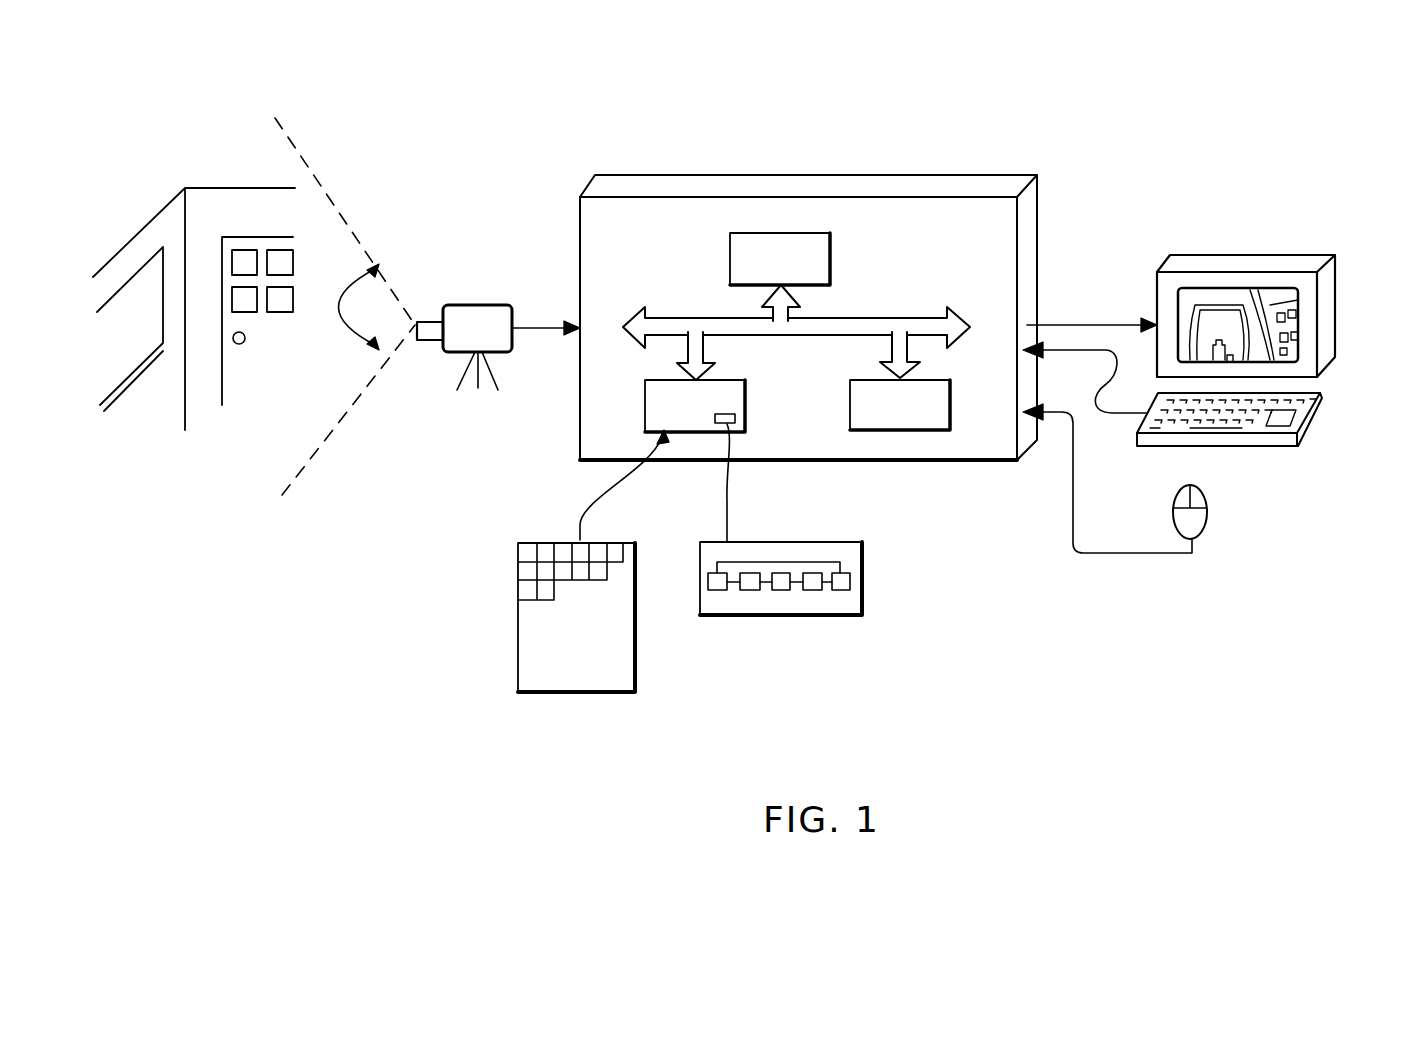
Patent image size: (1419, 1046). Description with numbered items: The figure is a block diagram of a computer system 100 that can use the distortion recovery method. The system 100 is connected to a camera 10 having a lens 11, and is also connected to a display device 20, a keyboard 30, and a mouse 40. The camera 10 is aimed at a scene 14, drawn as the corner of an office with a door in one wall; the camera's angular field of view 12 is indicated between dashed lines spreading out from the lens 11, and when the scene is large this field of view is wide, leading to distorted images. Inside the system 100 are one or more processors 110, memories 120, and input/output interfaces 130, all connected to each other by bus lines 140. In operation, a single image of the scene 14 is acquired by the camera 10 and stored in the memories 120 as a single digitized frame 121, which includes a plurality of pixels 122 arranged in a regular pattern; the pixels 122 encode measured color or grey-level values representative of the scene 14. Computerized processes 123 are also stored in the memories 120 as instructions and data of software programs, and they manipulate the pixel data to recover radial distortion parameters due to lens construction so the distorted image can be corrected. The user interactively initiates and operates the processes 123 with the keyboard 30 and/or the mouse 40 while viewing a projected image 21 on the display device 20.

The camera 10 is at (483, 305).
The lens 11 is at (431, 321).
The field of view angle 12 is at (333, 307).
The scene 14 is at (163, 168).
The display device 20 is at (1225, 262).
The projected image 21 is at (1337, 315).
The keyboard 30 is at (1318, 422).
The mouse 40 is at (1207, 510).
The computer system 100 is at (900, 180).
The processors 110 is at (832, 261).
The memories 120 is at (747, 402).
The digitized frame 121 is at (512, 642).
The pixels 122 is at (523, 553).
The computerized processes 123 is at (795, 617).
The input/output interfaces 130 is at (950, 402).
The bus lines 140 is at (872, 318).